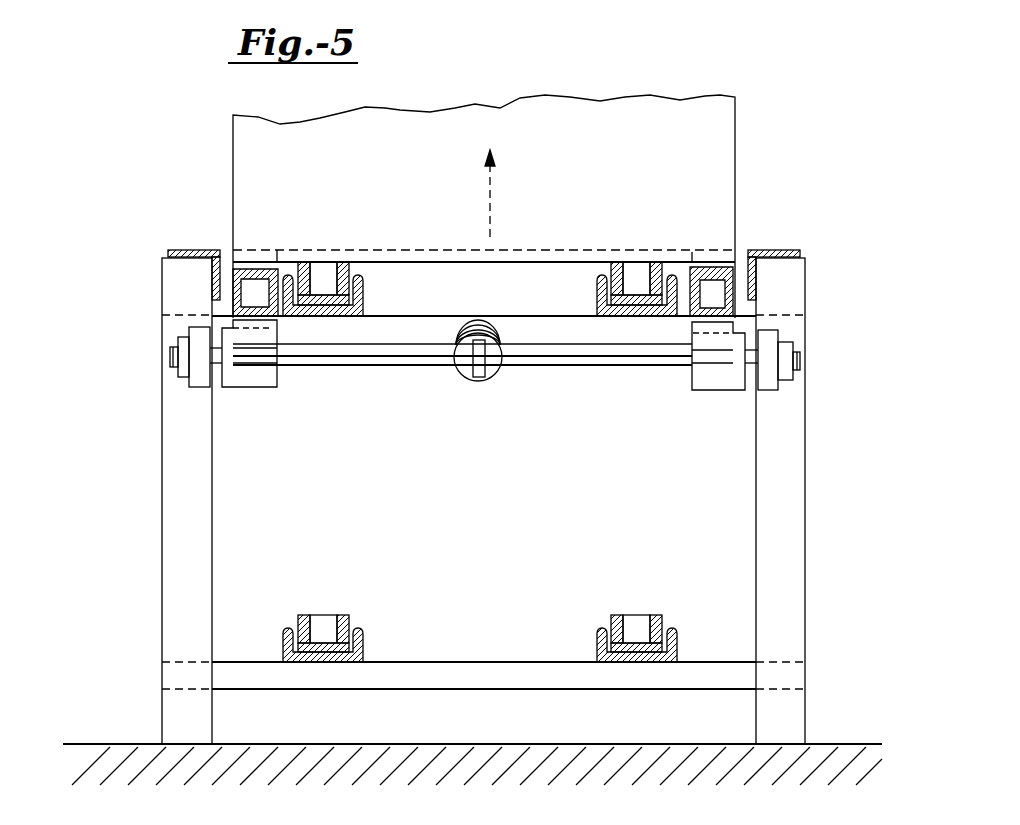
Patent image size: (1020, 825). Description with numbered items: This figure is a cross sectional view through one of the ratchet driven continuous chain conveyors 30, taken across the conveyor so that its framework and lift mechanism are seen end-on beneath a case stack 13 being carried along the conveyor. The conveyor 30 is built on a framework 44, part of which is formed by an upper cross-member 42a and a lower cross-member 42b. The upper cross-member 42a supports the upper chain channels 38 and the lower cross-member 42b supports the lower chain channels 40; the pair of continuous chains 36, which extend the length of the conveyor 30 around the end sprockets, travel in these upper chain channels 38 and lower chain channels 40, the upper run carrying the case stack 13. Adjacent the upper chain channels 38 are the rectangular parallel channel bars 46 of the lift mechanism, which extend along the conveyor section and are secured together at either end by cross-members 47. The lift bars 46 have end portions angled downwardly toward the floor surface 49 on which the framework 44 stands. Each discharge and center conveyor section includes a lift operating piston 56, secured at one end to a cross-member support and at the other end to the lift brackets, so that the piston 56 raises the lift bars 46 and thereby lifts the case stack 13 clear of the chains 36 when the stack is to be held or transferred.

The case stack 13 is at (736, 173).
The ratchet driven continuous chain conveyor 30 is at (140, 486).
The continuous chain 36 is at (360, 271).
The upper chain channel 38 is at (364, 308).
The lower chain channel 40 is at (364, 640).
The cross-member 42a is at (378, 334).
The cross-member 42b is at (428, 688).
The framework 44 is at (208, 555).
The channel bar 46 is at (213, 308).
The cross-member 47 is at (603, 364).
The floor surface 49 is at (836, 744).
The lift operating piston 56 is at (461, 381).